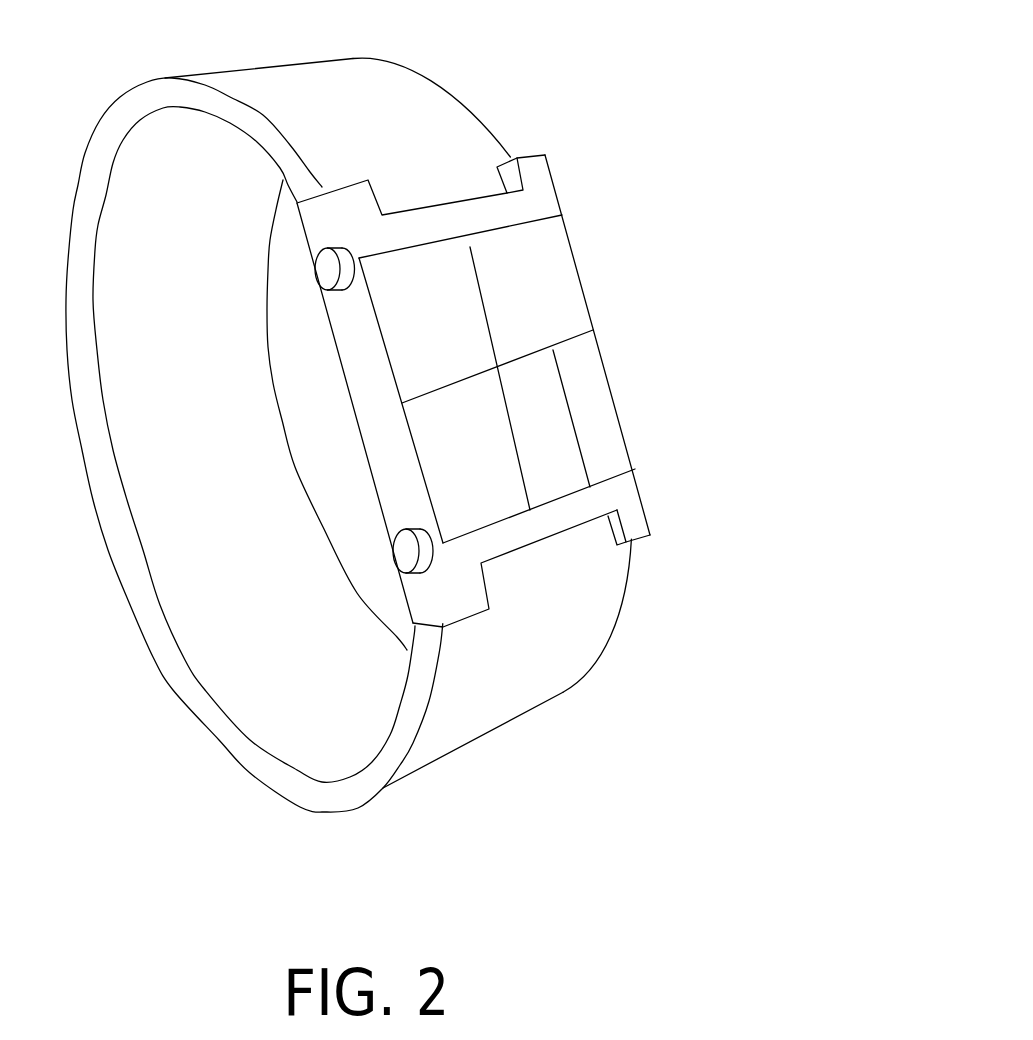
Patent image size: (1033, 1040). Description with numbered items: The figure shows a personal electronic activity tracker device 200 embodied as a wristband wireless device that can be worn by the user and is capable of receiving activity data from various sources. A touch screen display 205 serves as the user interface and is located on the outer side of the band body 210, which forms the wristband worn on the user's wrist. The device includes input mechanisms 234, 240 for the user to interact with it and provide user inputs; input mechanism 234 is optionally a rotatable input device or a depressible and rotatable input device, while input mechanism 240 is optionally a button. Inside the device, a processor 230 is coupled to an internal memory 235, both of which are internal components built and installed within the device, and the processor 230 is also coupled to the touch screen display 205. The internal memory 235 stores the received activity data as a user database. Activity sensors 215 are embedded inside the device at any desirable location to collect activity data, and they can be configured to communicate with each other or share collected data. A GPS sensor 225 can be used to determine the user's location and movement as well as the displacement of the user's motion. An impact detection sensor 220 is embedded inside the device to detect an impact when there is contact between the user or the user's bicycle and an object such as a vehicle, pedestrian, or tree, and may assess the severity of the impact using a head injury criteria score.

The activity tracker device 200 is at (398, 408).
The touch screen display 205 is at (465, 391).
The band body 210 is at (603, 660).
The activity sensors 215 is at (487, 512).
The impact detection sensor 220 is at (570, 483).
The GPS sensor 225 is at (620, 463).
The processor 230 is at (400, 328).
The input mechanism 234 is at (327, 275).
The internal memory 235 is at (570, 268).
The input mechanism 240 is at (403, 557).